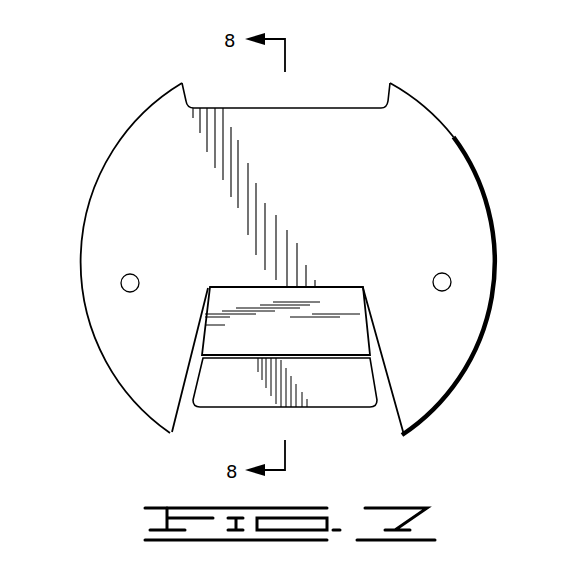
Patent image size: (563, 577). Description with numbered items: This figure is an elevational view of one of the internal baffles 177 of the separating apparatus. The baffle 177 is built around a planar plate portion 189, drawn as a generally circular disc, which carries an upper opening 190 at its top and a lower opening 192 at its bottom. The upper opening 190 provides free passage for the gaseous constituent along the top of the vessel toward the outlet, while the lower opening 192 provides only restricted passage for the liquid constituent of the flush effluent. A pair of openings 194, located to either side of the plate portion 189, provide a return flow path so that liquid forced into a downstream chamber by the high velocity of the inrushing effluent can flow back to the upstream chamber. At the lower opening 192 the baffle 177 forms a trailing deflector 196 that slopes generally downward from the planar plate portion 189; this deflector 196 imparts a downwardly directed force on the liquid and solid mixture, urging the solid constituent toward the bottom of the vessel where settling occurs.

The baffle 177 is at (148, 103).
The planar plate portion 189 is at (425, 177).
The upper opening 190 is at (329, 92).
The lower opening 192 is at (316, 423).
The openings 194 is at (131, 292).
The trailing deflector 196 is at (247, 298).